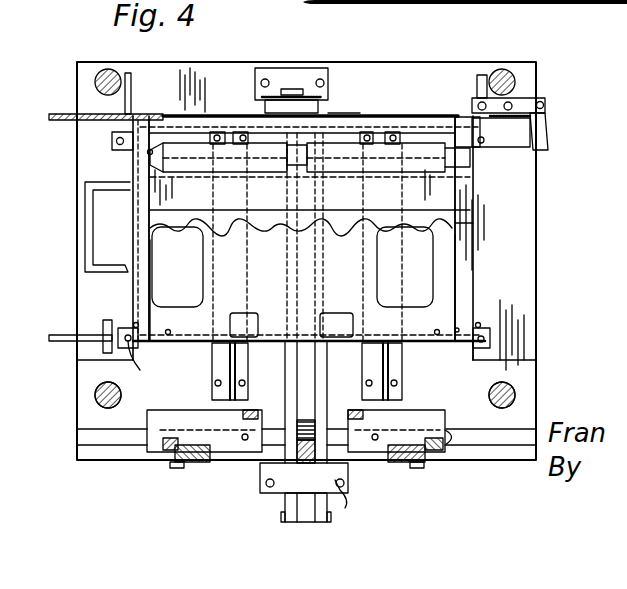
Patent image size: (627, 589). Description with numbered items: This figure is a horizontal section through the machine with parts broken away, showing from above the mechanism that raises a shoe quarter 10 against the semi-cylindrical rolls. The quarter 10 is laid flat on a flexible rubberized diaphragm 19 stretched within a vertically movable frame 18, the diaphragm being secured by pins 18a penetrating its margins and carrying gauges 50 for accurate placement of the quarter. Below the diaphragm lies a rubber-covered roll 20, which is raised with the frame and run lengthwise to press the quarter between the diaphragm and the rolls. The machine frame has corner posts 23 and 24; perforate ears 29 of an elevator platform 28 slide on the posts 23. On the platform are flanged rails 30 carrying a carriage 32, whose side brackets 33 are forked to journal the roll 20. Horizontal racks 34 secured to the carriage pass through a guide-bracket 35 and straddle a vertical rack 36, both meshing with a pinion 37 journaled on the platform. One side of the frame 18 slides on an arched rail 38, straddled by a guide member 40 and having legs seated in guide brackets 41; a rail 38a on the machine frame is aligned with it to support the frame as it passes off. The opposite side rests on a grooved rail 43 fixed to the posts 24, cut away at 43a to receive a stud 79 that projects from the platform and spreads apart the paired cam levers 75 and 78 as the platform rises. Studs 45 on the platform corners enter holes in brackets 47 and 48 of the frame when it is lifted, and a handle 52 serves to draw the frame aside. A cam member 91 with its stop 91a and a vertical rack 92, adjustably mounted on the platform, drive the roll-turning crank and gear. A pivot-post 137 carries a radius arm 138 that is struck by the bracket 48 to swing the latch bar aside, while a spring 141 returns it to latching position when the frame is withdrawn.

The quarter 10 is at (302, 288).
The vertically movable frame 18 is at (465, 245).
The pins 18a is at (168, 330).
The flexible sheet or diaphragm 19 is at (441, 283).
The roll 20 is at (262, 150).
The corner posts 23 is at (97, 407).
The corner posts 24 is at (105, 70).
The elevator platform 28 is at (460, 356).
The perforate ears 29 is at (88, 382).
The medially-flanged run-ways or rails 30 is at (228, 363).
The carriage 32 is at (339, 219).
The brackets 33 is at (148, 158).
The horizontal racks 34 is at (287, 367).
The guide-bracket 35 is at (358, 501).
The vertical rack 36 is at (300, 466).
The pinion 37 is at (310, 420).
The arched rail 38 is at (138, 360).
The rail 38a is at (60, 341).
The guide member 40 is at (133, 324).
The guide brackets 41 is at (122, 335).
The grooved rail 43 is at (82, 115).
The cut-away portion 43a is at (325, 112).
The studs or dowels 45 is at (148, 152).
The ear or bracket 47 is at (112, 137).
The ear or bracket 48 is at (481, 145).
The gauges 50 is at (292, 282).
The handle 52 is at (88, 225).
The cam-lever 75 is at (272, 95).
The cam-lever 78 is at (312, 96).
The stud 79 is at (291, 89).
The cam member 91 is at (200, 462).
The stop 91a is at (160, 452).
The vertical rack 92 is at (250, 410).
The vertical pivot-post 137 is at (545, 105).
The radius arm 138 is at (548, 138).
The spring 141 is at (528, 112).